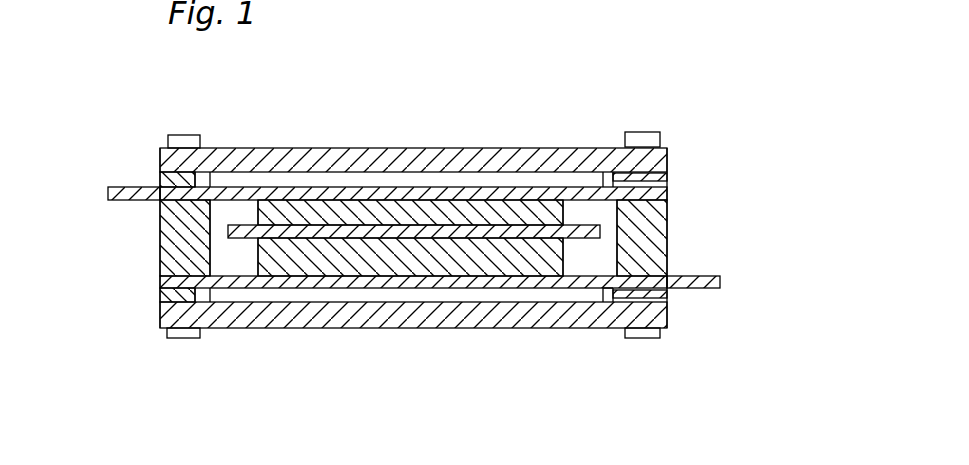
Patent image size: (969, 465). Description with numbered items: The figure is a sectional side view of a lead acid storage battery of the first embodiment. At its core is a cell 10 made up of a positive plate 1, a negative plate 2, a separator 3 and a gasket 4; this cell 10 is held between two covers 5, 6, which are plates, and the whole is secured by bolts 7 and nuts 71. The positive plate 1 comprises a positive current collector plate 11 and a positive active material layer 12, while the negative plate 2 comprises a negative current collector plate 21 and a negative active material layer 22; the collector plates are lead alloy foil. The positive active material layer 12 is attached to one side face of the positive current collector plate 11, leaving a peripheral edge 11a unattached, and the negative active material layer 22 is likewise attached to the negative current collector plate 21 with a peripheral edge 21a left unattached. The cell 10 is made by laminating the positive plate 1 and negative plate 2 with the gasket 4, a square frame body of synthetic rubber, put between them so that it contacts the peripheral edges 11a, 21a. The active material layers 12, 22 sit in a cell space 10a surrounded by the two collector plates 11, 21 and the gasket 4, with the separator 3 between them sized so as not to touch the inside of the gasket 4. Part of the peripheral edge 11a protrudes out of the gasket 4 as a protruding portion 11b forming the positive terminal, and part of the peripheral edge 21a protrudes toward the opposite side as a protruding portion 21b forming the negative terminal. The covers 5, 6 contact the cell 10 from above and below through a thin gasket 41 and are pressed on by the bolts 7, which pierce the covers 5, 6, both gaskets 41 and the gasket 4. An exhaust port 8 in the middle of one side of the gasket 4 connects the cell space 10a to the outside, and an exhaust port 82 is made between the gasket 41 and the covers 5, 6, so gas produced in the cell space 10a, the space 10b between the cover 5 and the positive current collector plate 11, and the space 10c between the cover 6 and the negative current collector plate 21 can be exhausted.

The positive plate 1 is at (461, 326).
The negative plate 2 is at (345, 151).
The separator 3 is at (497, 228).
The gasket 4 is at (166, 249).
The cover 5 is at (252, 318).
The cover 6 is at (268, 150).
The bolt 7 is at (185, 146).
The exhaust port 8 is at (660, 223).
The cell 10 is at (429, 232).
The cell space 10a is at (581, 263).
The space 10b is at (297, 293).
The space 10c is at (298, 182).
The positive current collector plate 11 is at (388, 290).
The peripheral edge 11a is at (182, 337).
The protruding portion 11b is at (698, 288).
The positive active material layer 12 is at (353, 267).
The negative current collector plate 21 is at (342, 180).
The peripheral edge 21a is at (219, 190).
The protruding portion 21b is at (117, 200).
The negative active material layer 22 is at (358, 210).
The gasket 41 is at (165, 180).
The nut 71 is at (197, 293).
The exhaust port 82 is at (668, 158).